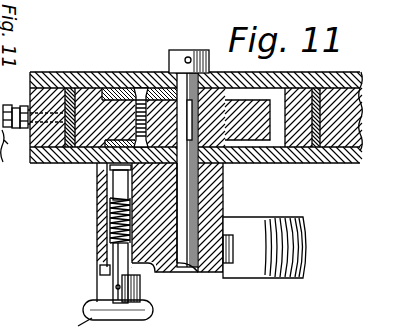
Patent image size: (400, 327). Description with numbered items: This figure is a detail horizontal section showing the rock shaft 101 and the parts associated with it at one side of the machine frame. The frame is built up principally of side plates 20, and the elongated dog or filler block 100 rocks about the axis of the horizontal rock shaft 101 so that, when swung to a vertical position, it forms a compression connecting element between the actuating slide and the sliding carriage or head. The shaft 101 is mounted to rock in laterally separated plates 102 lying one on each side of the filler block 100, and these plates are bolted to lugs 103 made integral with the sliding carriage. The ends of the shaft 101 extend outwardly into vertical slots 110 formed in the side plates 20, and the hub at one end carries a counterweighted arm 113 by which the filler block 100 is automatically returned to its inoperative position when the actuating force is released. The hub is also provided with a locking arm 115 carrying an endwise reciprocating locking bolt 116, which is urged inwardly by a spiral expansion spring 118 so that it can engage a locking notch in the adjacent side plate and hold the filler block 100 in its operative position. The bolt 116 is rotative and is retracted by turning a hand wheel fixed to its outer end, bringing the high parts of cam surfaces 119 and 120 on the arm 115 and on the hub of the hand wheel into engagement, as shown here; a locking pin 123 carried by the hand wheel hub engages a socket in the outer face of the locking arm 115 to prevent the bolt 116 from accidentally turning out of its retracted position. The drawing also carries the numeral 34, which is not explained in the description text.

The side plate 20 is at (44, 165).
The knob handle 34 is at (143, 313).
The filler block 100 is at (253, 137).
The rock shaft 101 is at (188, 50).
The plate 102 is at (157, 90).
The lug 103 is at (274, 323).
The vertical slot 110 is at (312, 323).
The counterweighted arm 113 is at (307, 252).
The locking arm 115 is at (110, 244).
The locking bolt 116 is at (130, 267).
The spiral expansion spring 118 is at (107, 217).
The cam surface 119 is at (115, 274).
The cam surface 120 is at (194, 272).
The locking pin 123 is at (100, 268).